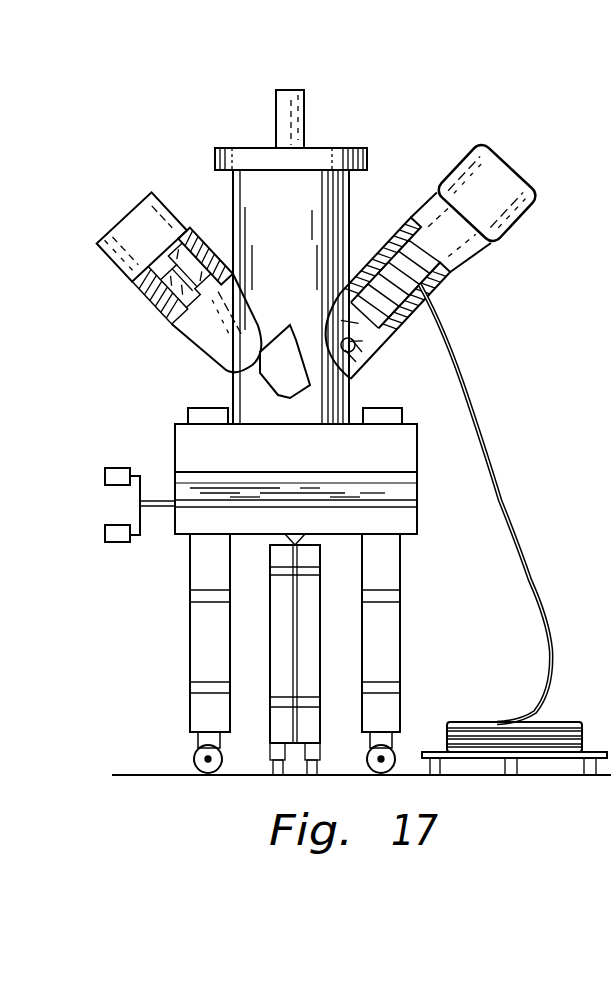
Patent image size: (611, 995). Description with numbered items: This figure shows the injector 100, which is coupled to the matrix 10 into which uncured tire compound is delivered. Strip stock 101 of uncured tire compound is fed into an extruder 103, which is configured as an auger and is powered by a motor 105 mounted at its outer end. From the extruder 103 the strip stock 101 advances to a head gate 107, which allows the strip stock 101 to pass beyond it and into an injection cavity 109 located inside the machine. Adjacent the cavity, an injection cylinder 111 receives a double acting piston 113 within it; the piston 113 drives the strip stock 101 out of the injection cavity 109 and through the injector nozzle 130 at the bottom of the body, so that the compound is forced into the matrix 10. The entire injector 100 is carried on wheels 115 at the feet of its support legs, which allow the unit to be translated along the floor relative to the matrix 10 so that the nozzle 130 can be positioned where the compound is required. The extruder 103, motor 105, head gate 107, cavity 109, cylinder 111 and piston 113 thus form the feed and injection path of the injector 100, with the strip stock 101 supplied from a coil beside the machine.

The injector 100 is at (222, 125).
The matrix 10 is at (266, 627).
The strip stock 101 is at (482, 442).
The extruder 103 is at (410, 262).
The motor 105 is at (493, 170).
The head gate 107 is at (360, 362).
The injection cavity 109 is at (277, 385).
The injection cylinder 111 is at (208, 333).
The double acting piston 113 is at (198, 305).
The wheels 115 is at (194, 760).
The injector nozzle 130 is at (290, 543).